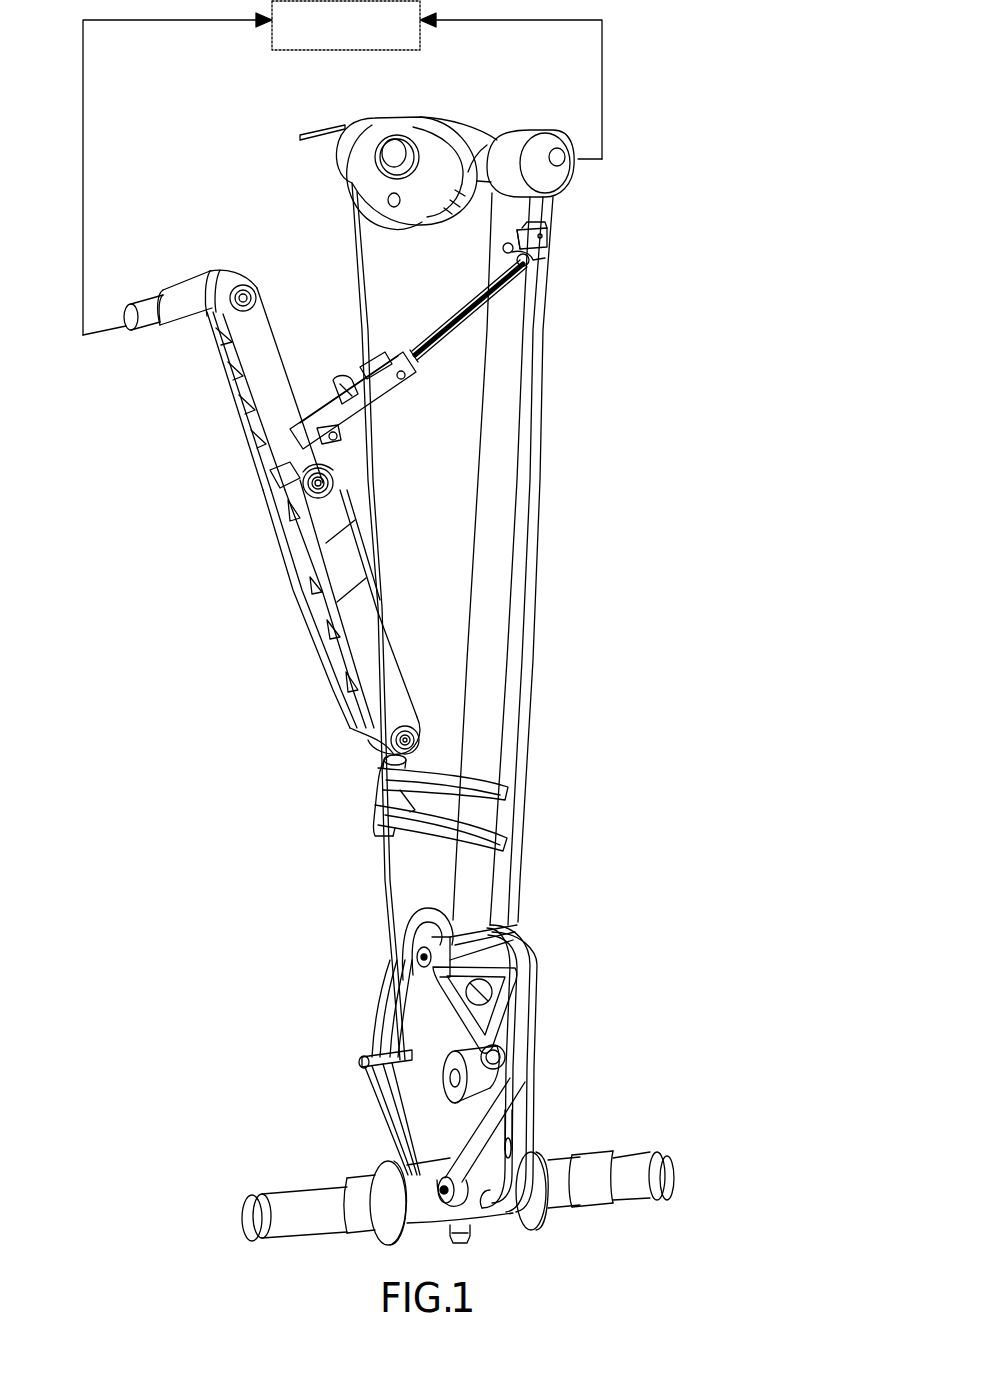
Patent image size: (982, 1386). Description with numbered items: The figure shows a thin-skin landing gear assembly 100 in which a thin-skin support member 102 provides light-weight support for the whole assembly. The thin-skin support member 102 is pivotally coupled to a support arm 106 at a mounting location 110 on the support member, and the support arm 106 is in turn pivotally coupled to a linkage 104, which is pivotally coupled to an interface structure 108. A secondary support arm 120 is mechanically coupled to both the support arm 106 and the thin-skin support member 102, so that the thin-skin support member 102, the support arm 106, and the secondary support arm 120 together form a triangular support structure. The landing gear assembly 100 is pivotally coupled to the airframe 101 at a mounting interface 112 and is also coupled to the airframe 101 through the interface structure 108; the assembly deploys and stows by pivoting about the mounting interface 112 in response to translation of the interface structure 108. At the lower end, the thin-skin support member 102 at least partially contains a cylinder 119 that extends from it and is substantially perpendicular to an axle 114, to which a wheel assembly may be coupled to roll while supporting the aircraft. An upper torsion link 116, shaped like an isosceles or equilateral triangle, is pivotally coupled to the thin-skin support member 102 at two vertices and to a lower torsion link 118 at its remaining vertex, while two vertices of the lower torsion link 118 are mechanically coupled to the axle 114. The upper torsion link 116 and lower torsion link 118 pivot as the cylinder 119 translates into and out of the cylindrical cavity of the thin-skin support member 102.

The landing gear assembly 100 is at (704, 75).
The airframe 101 is at (270, 46).
The thin-skin support member 102 is at (523, 449).
The linkage 104 is at (262, 360).
The support arm 106 is at (370, 657).
The interface structure 108 is at (178, 300).
The mounting location 110 is at (387, 797).
The mounting interface 112 is at (392, 162).
The axle 114 is at (298, 1215).
The upper torsion link 116 is at (463, 992).
The lower torsion link 118 is at (518, 1130).
The cylinder 119 is at (440, 1127).
The secondary support arm 120 is at (478, 284).